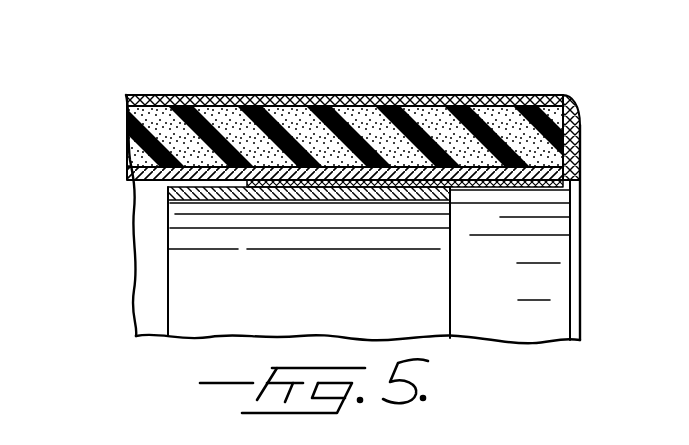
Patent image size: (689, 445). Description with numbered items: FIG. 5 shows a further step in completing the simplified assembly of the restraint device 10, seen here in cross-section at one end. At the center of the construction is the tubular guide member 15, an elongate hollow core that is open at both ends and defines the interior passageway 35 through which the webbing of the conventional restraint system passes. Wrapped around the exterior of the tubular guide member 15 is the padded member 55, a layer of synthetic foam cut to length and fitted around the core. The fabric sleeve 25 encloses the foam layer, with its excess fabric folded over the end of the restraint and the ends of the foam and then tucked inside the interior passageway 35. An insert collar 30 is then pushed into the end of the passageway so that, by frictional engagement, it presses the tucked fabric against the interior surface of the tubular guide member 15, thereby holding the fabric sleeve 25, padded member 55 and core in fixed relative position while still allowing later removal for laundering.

The restraint device 10 is at (452, 70).
The tubular guide member 15 is at (147, 186).
The fabric sleeve 25 is at (302, 95).
The insert collar 30 is at (228, 190).
The interior passageway 35 is at (394, 297).
The padded member 55 is at (147, 139).